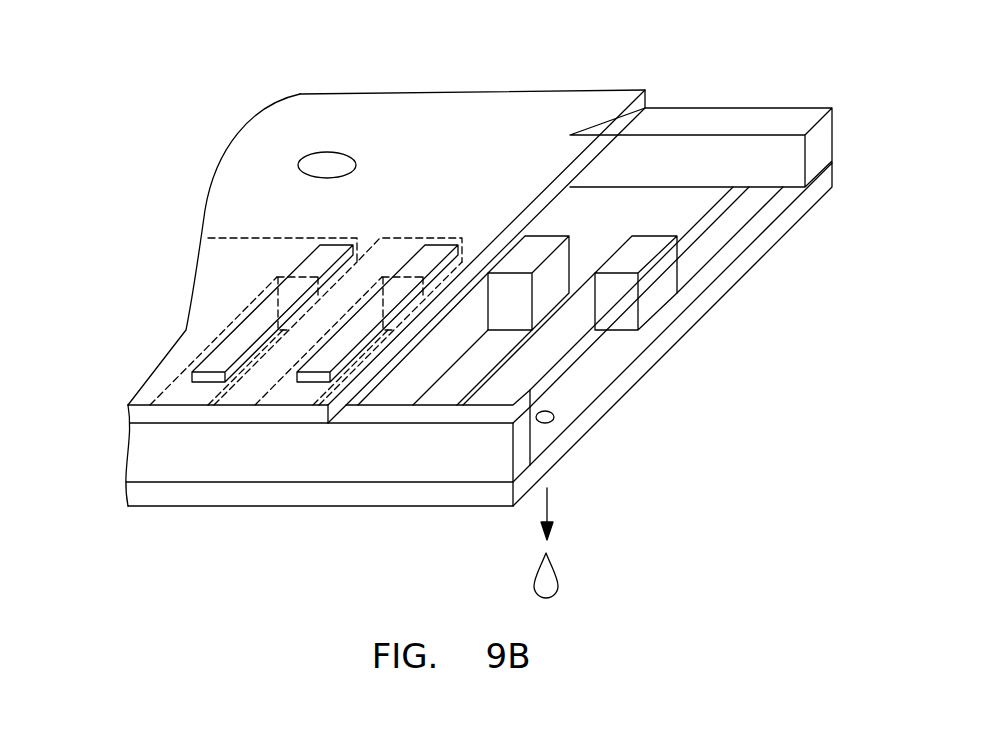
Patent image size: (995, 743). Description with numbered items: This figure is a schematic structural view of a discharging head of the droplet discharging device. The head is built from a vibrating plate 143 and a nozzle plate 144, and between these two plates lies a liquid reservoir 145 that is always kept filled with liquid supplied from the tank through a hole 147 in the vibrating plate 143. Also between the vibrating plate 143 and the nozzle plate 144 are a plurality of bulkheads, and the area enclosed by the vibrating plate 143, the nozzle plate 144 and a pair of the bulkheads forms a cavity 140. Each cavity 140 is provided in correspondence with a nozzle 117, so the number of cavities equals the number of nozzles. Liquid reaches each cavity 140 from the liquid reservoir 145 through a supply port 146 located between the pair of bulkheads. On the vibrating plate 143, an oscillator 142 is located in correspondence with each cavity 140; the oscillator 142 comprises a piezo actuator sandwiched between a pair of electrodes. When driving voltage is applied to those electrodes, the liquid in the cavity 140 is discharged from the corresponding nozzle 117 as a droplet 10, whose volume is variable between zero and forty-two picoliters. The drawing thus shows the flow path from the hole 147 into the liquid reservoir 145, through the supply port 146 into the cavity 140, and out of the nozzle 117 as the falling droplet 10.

The droplet 10 is at (556, 580).
The nozzle 117 is at (556, 412).
The cavity 140 is at (482, 302).
The oscillator 142 is at (230, 347).
The vibrating plate 143 is at (347, 400).
The nozzle plate 144 is at (707, 282).
The liquid reservoir 145 is at (745, 220).
The supply port 146 is at (555, 262).
The hole 147 is at (314, 165).